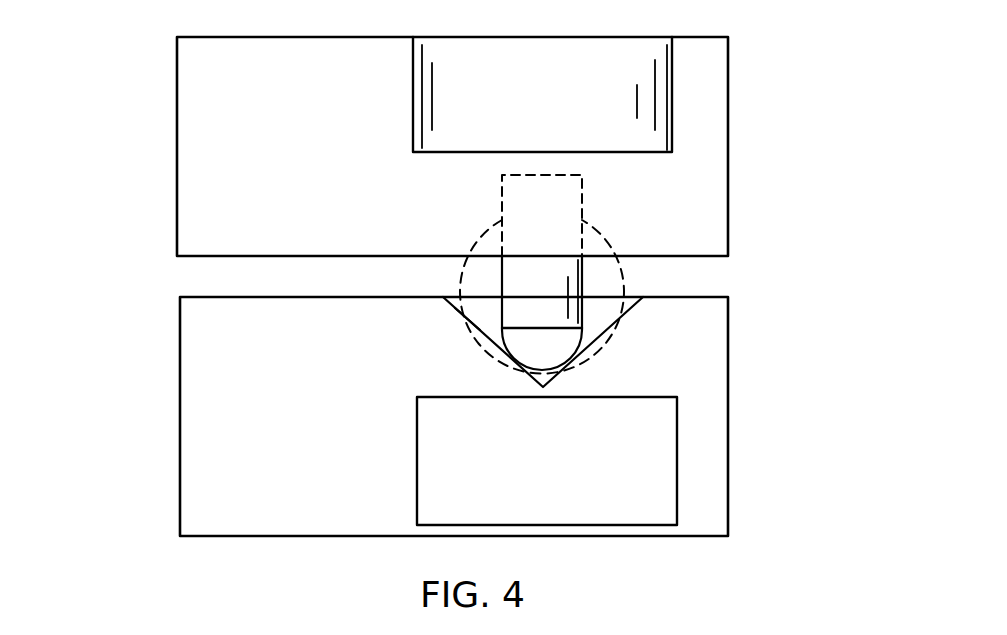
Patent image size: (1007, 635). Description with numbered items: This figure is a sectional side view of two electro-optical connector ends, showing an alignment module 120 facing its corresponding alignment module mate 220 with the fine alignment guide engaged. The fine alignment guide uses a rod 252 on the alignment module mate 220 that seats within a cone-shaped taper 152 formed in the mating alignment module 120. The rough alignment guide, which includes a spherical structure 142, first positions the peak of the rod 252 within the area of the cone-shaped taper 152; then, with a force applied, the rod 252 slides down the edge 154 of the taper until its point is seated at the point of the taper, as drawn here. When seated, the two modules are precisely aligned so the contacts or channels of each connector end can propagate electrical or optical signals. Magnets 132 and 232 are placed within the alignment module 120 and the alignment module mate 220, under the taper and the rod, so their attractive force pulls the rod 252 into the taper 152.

The alignment module mate 220 is at (177, 153).
The magnet 232 is at (672, 118).
The alignment module 120 is at (180, 418).
The magnet 132 is at (677, 485).
The rod 252 is at (582, 285).
The spherical structure 142 is at (462, 280).
The cone-shaped taper 152 is at (597, 318).
The edge of the taper 154 is at (467, 329).